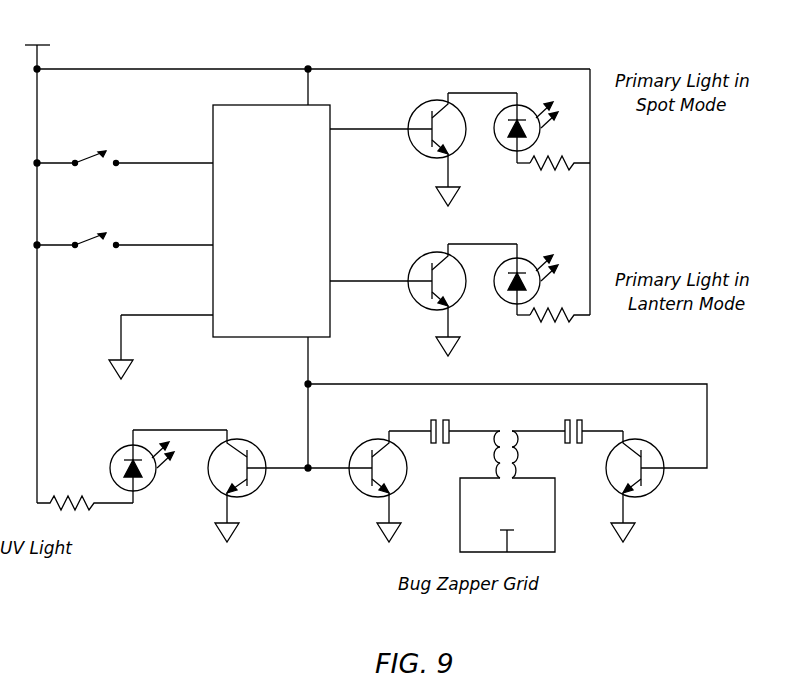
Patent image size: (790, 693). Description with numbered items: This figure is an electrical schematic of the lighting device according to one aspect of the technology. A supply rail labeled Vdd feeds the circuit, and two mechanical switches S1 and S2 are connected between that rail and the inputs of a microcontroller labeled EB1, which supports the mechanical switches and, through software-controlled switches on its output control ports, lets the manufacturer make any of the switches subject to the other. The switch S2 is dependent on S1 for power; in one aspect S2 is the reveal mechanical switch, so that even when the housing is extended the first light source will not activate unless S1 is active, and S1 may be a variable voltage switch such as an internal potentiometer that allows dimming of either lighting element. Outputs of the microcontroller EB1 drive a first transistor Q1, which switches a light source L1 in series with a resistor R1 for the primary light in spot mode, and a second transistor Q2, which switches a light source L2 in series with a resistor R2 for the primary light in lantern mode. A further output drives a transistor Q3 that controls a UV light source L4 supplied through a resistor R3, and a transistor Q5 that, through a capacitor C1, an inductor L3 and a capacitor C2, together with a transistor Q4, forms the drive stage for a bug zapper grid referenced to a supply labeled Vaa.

The supply voltage Vdd is at (37, 46).
The microcontroller EB1 is at (219, 274).
The mechanical switch S1 is at (123, 236).
The reveal mechanical switch S2 is at (123, 154).
The transistor Q1 is at (398, 149).
The transistor Q2 is at (398, 300).
The transistor Q3 is at (259, 486).
The transistor Q4 is at (648, 486).
The transistor Q5 is at (357, 486).
The primary light LED (spot mode) L1 is at (503, 128).
The primary light LED (lantern mode) L2 is at (503, 279).
The inductor / transformer L3 is at (506, 442).
The UV light LED L4 is at (158, 466).
The resistor R1 is at (560, 177).
The resistor R2 is at (560, 329).
The resistor R3 is at (85, 493).
The capacitor C1 is at (444, 419).
The capacitor C2 is at (567, 419).
The bug zapper grid voltage Vaa is at (506, 530).